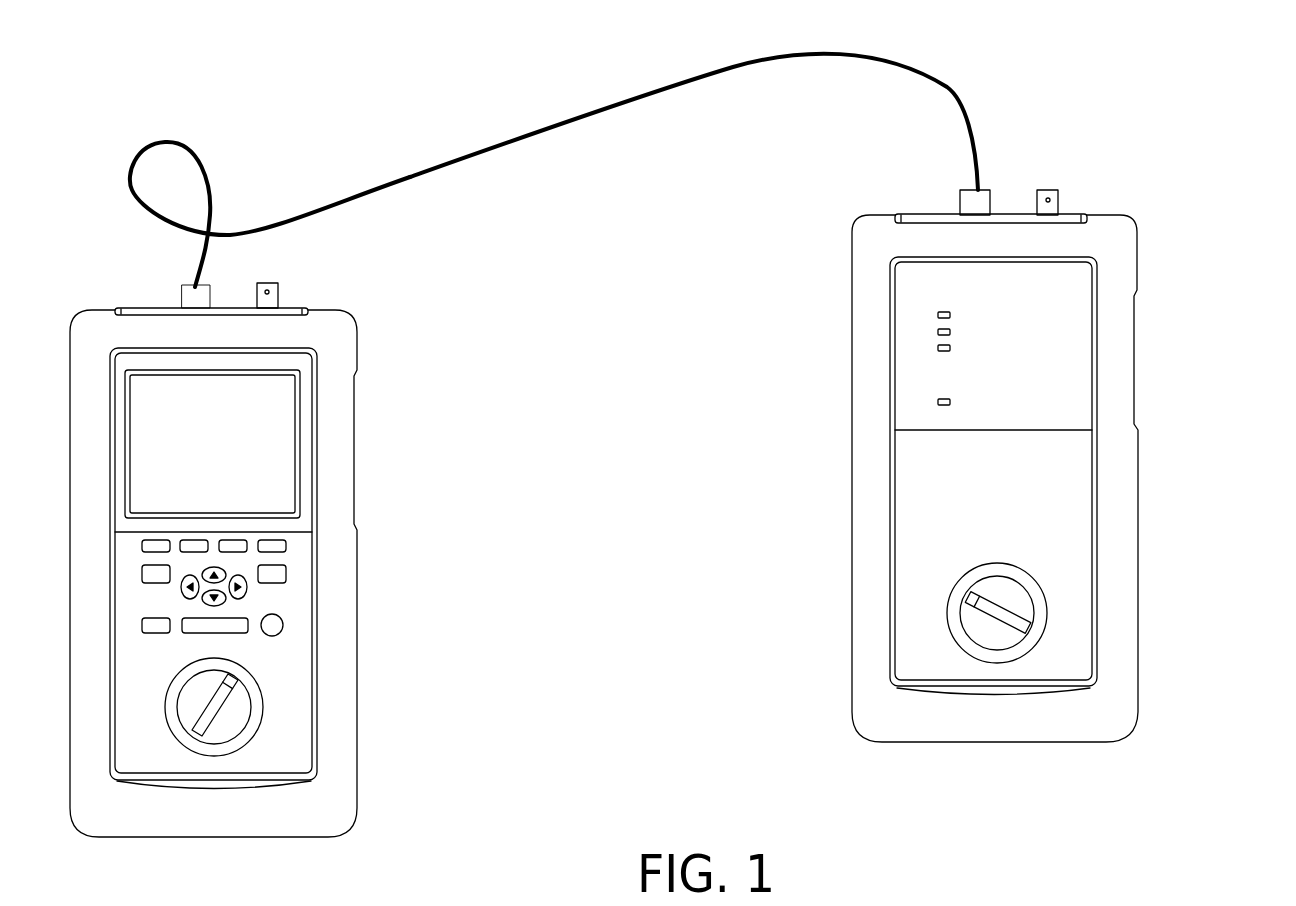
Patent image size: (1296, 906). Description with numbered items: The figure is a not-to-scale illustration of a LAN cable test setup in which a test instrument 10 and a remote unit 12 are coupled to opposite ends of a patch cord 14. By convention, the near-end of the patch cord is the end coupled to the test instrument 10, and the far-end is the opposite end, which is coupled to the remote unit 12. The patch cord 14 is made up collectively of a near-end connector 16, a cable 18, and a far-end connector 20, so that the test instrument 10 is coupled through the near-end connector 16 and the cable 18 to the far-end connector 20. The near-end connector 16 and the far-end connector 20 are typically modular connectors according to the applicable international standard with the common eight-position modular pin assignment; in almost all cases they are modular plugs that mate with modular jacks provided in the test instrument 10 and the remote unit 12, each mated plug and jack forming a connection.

The test instrument 10 is at (322, 537).
The remote unit 12 is at (1072, 441).
The patch cord 14 is at (554, 170).
The near-end connector 16 is at (208, 287).
The cable 18 is at (362, 192).
The far-end connector 20 is at (987, 188).